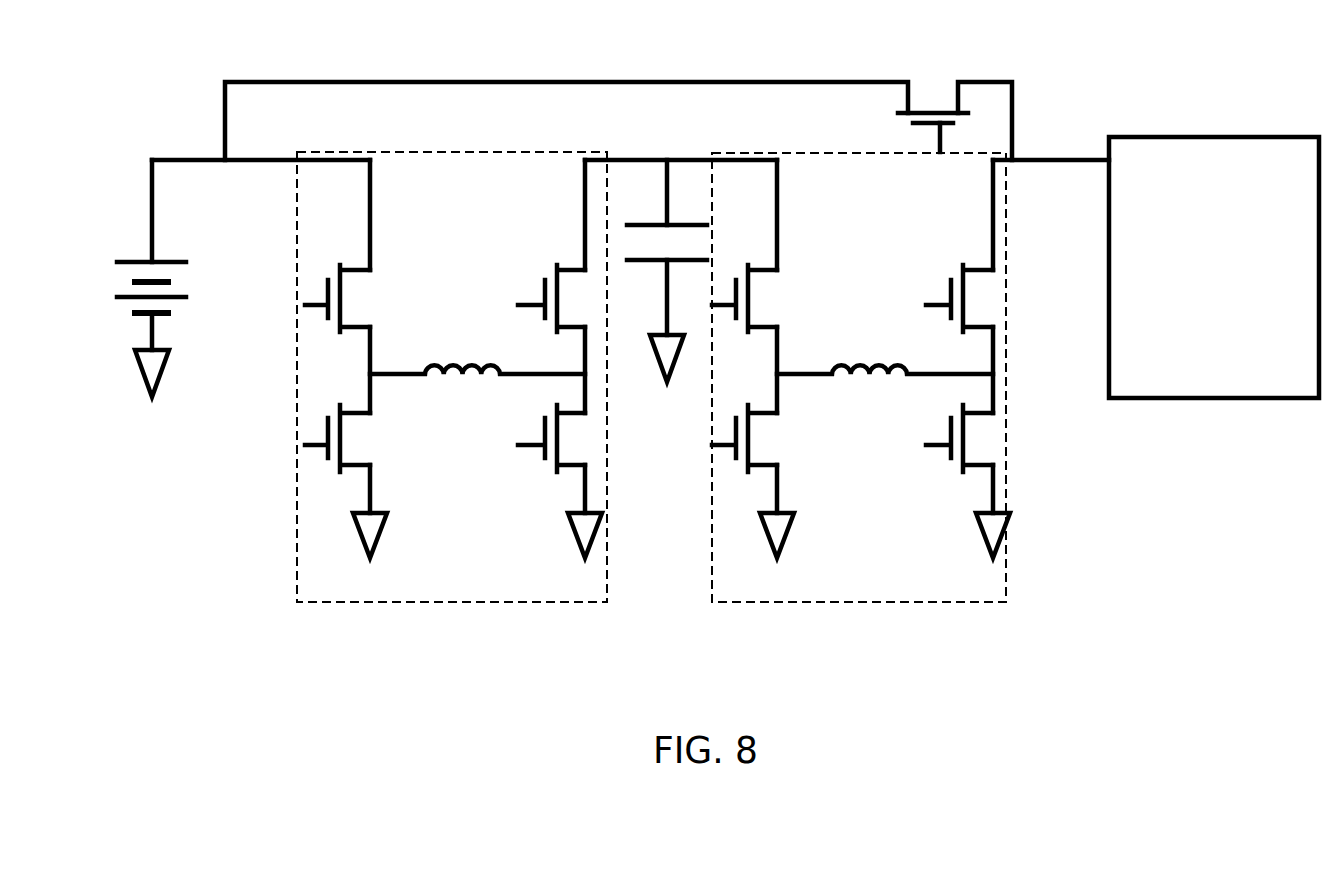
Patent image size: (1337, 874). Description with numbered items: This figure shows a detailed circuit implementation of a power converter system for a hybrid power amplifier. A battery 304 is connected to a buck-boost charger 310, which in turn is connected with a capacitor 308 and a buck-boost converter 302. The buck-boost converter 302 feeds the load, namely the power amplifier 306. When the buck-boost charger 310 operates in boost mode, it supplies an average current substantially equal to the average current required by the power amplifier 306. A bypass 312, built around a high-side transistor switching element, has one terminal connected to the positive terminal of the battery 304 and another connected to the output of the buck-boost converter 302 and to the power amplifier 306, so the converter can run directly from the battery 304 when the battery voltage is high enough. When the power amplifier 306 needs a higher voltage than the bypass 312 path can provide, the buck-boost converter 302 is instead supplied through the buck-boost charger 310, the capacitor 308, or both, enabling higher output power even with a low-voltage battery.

The buck-boost converter 302 is at (803, 152).
The battery 304 is at (109, 262).
The power amplifier 306 is at (1162, 135).
The capacitor 308 is at (650, 297).
The buck-boost charger 310 is at (477, 602).
The bypass 312 is at (588, 80).